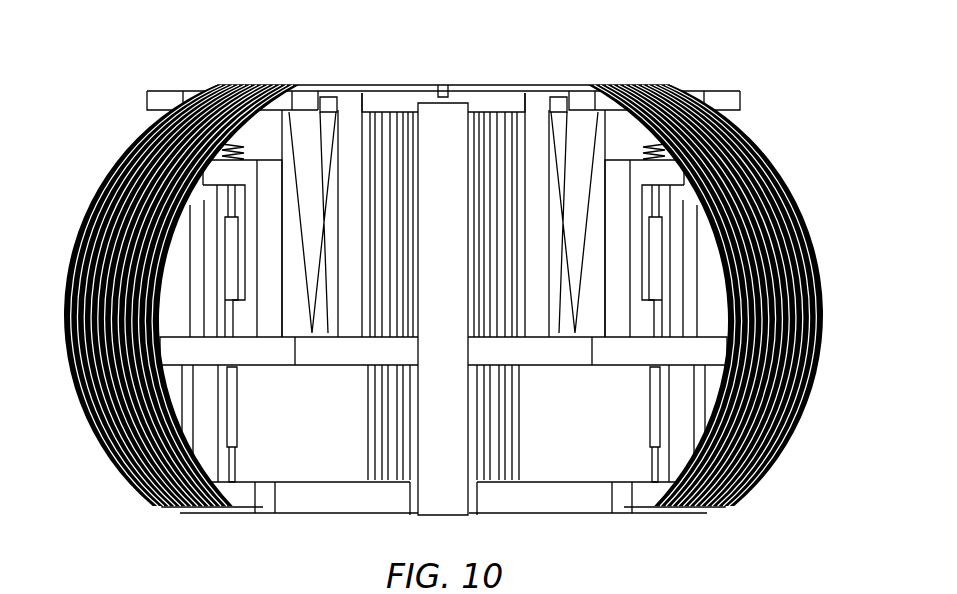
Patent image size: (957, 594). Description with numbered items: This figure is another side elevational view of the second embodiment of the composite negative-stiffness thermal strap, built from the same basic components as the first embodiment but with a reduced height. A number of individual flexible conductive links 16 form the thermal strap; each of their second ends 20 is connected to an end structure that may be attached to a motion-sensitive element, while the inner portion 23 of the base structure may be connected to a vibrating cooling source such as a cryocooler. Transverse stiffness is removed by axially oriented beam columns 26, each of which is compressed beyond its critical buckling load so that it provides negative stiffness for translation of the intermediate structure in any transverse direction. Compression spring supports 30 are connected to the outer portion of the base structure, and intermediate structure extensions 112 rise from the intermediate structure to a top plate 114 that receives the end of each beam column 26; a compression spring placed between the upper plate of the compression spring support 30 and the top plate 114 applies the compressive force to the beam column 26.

The flexible conductive link 16 is at (117, 190).
The second end 20 is at (555, 360).
The inner portion 23 is at (333, 498).
The beam column 26 is at (232, 400).
The compression spring support 30 is at (450, 418).
The intermediate structure extension 112 is at (267, 213).
The top plate 114 is at (243, 170).